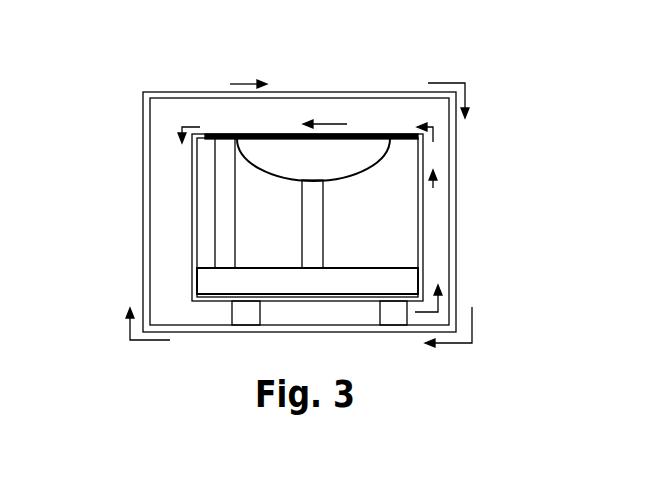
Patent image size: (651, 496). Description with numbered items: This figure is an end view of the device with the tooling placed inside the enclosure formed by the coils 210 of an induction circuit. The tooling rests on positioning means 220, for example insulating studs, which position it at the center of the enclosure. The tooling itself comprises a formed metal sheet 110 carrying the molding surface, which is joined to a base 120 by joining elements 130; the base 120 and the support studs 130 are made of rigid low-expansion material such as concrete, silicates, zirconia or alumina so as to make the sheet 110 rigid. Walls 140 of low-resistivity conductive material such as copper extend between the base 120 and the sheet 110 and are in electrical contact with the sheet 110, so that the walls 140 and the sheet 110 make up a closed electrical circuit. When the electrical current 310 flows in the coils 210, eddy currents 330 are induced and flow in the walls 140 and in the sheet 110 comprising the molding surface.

The formed metal sheet 110 is at (240, 148).
The base 120 is at (393, 267).
The joining elements 130 is at (215, 203).
The walls 140 is at (192, 235).
The coils 210 is at (143, 175).
The positioning means 220 is at (182, 280).
The electrical current 310 is at (255, 84).
The eddy currents 330 is at (333, 122).